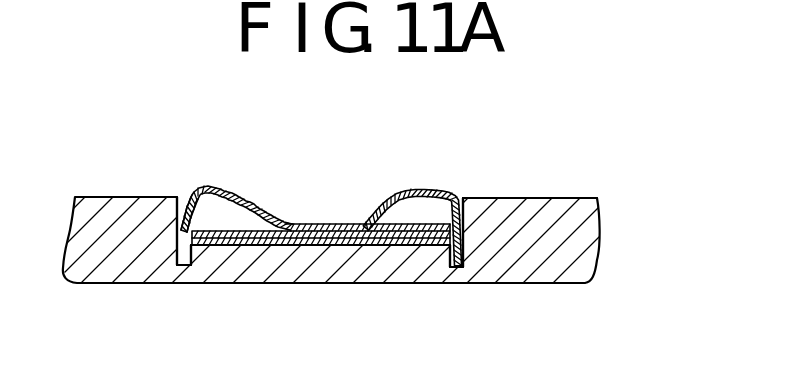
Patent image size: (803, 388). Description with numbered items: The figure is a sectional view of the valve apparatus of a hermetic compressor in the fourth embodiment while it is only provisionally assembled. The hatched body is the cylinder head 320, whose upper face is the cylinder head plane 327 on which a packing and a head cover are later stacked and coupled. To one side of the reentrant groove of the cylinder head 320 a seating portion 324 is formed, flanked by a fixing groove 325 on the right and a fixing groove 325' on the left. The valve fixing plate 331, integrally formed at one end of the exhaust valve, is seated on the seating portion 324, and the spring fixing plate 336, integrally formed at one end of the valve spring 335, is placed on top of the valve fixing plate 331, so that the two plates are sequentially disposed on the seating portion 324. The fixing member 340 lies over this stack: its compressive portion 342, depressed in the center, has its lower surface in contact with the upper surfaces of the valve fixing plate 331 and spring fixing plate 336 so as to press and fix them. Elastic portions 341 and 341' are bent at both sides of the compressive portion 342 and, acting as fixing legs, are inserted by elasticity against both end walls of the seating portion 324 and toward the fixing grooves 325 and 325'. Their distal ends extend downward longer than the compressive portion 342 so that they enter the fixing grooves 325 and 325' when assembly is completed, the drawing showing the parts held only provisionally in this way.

The cylinder head 320 is at (588, 235).
The cylinder head plane 327 is at (543, 197).
The fixing groove 325 is at (458, 268).
The fixing groove 325' is at (171, 266).
The compressive portion 342 is at (338, 224).
The valve fixing plate 331 is at (257, 247).
The seating portion 324 is at (243, 221).
The valve spring 335 is at (223, 222).
The elastic portion 341' is at (145, 184).
The spring fixing plate 336 is at (388, 203).
The fixing member 340 is at (413, 192).
The elastic portion 341 is at (482, 197).